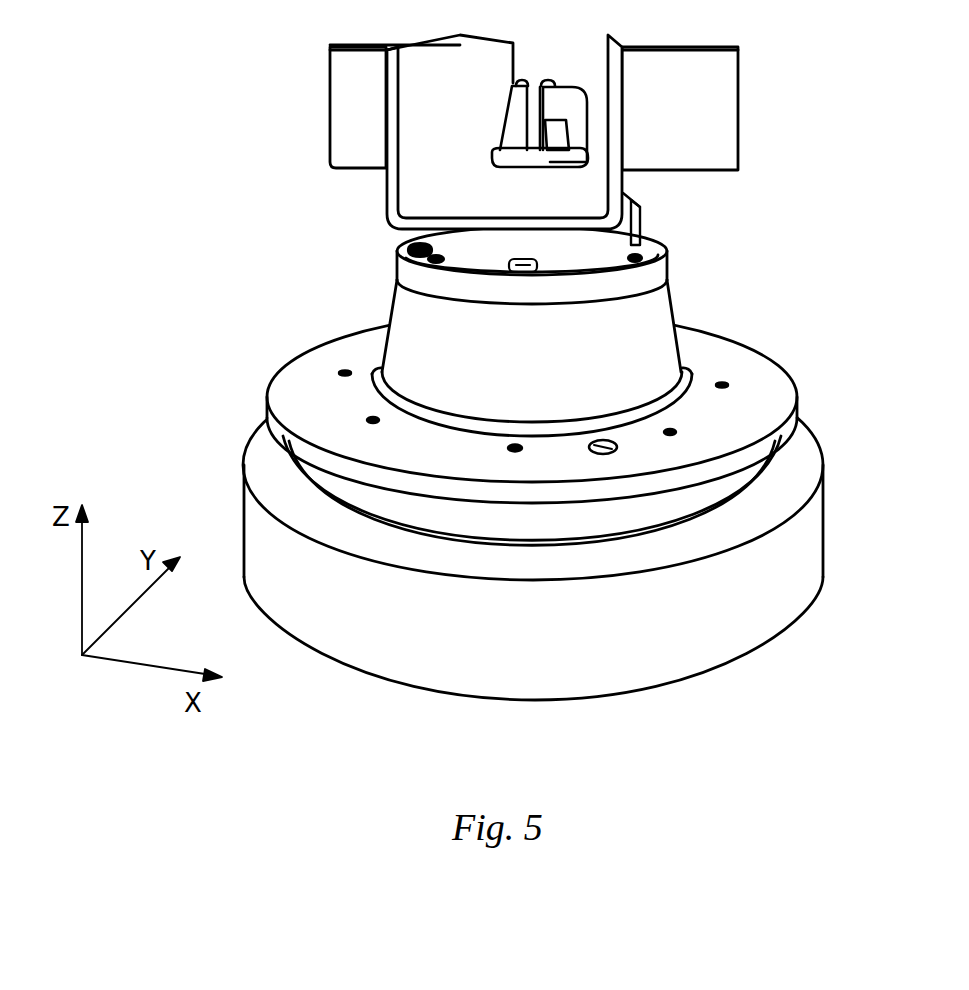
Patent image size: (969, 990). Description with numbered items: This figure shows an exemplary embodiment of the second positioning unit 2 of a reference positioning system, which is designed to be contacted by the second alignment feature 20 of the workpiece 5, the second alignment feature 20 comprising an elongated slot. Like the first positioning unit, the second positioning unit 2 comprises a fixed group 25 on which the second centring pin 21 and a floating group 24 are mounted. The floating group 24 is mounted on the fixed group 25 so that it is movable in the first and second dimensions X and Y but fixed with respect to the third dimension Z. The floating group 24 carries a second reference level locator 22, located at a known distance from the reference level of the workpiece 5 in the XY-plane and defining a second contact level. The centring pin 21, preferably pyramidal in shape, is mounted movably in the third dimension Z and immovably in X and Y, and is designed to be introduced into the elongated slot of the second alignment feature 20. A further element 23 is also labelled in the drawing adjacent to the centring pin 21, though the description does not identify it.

The second positioning unit 2 is at (330, 262).
The workpiece 5 is at (710, 93).
The second alignment feature 20 is at (513, 162).
The second centring pin 21 is at (512, 105).
The second reference level locator 22 is at (633, 210).
The holder part 23 is at (560, 107).
The floating group 24 is at (653, 357).
The fixed group 25 is at (295, 553).